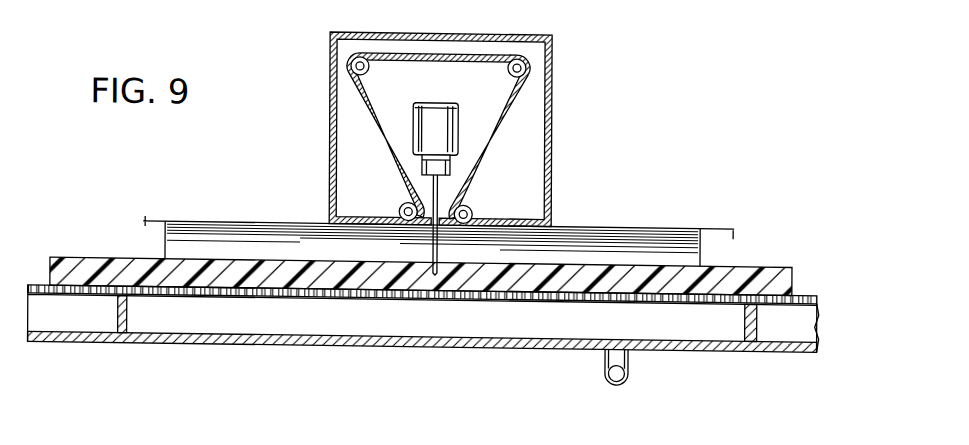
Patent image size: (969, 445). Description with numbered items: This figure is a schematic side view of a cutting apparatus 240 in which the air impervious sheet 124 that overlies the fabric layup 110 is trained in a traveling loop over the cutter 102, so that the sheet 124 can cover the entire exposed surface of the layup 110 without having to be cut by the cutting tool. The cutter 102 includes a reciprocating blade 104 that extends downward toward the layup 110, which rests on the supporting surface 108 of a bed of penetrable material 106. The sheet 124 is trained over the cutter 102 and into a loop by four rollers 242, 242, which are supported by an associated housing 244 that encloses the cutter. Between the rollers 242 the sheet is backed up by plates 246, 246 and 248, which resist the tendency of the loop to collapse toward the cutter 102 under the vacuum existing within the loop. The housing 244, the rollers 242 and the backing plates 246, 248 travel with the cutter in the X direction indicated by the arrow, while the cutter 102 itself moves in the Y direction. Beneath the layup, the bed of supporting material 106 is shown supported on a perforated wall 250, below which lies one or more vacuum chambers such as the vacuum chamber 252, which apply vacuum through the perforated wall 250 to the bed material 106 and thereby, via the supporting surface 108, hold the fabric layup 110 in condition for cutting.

The cutting apparatus 240 is at (583, 117).
The rollers 242 is at (349, 63).
The housing 244 is at (470, 114).
The plates 246 is at (390, 157).
The plate 248 is at (426, 55).
The cutter 102 is at (440, 103).
The reciprocating blade 104 is at (438, 189).
The air impervious sheet 124 is at (668, 219).
The fabric layup 110 is at (699, 252).
The supporting surface 108 is at (757, 264).
The bed of penetrable material 106 is at (436, 312).
The perforated wall 250 is at (44, 288).
The vacuum chamber 252 is at (468, 322).